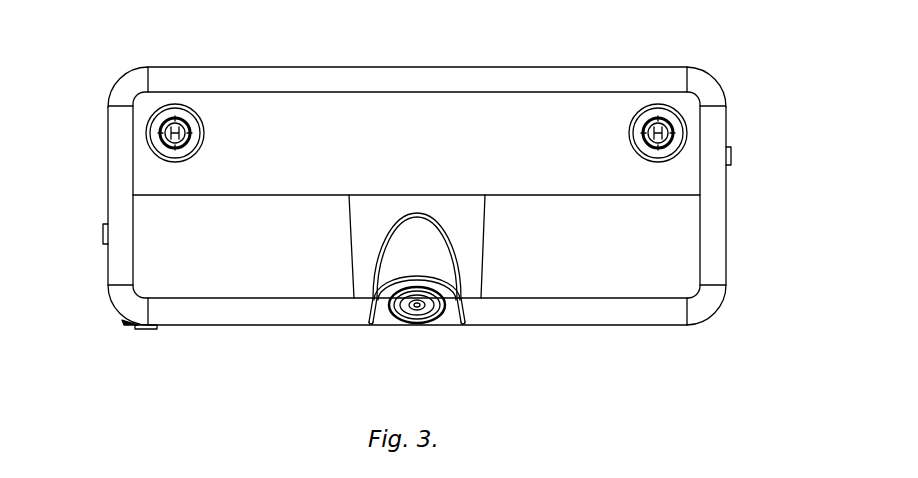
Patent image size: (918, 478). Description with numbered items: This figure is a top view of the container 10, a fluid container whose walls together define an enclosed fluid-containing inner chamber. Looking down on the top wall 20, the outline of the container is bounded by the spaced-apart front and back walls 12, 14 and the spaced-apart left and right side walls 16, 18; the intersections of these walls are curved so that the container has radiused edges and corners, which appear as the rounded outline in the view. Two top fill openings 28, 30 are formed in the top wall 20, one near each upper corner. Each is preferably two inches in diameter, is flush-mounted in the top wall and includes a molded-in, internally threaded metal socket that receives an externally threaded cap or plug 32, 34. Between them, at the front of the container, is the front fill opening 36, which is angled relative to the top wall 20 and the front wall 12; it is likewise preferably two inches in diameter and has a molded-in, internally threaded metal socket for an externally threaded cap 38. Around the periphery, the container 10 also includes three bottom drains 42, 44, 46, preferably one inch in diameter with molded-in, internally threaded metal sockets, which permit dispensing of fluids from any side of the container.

The container 10 is at (418, 201).
The front wall 12 is at (527, 330).
The back wall 14 is at (521, 60).
The left side wall 16 is at (107, 178).
The right side wall 18 is at (728, 243).
The top wall 20 is at (337, 106).
The top fill opening 28 is at (184, 97).
The top fill opening 30 is at (649, 93).
The cap or plug 32 is at (184, 140).
The cap or plug 34 is at (647, 137).
The front fill opening 36 is at (396, 312).
The cap 38 is at (428, 318).
The bottom drain 42 is at (102, 236).
The bottom drain 44 is at (146, 329).
The bottom drain 46 is at (732, 158).